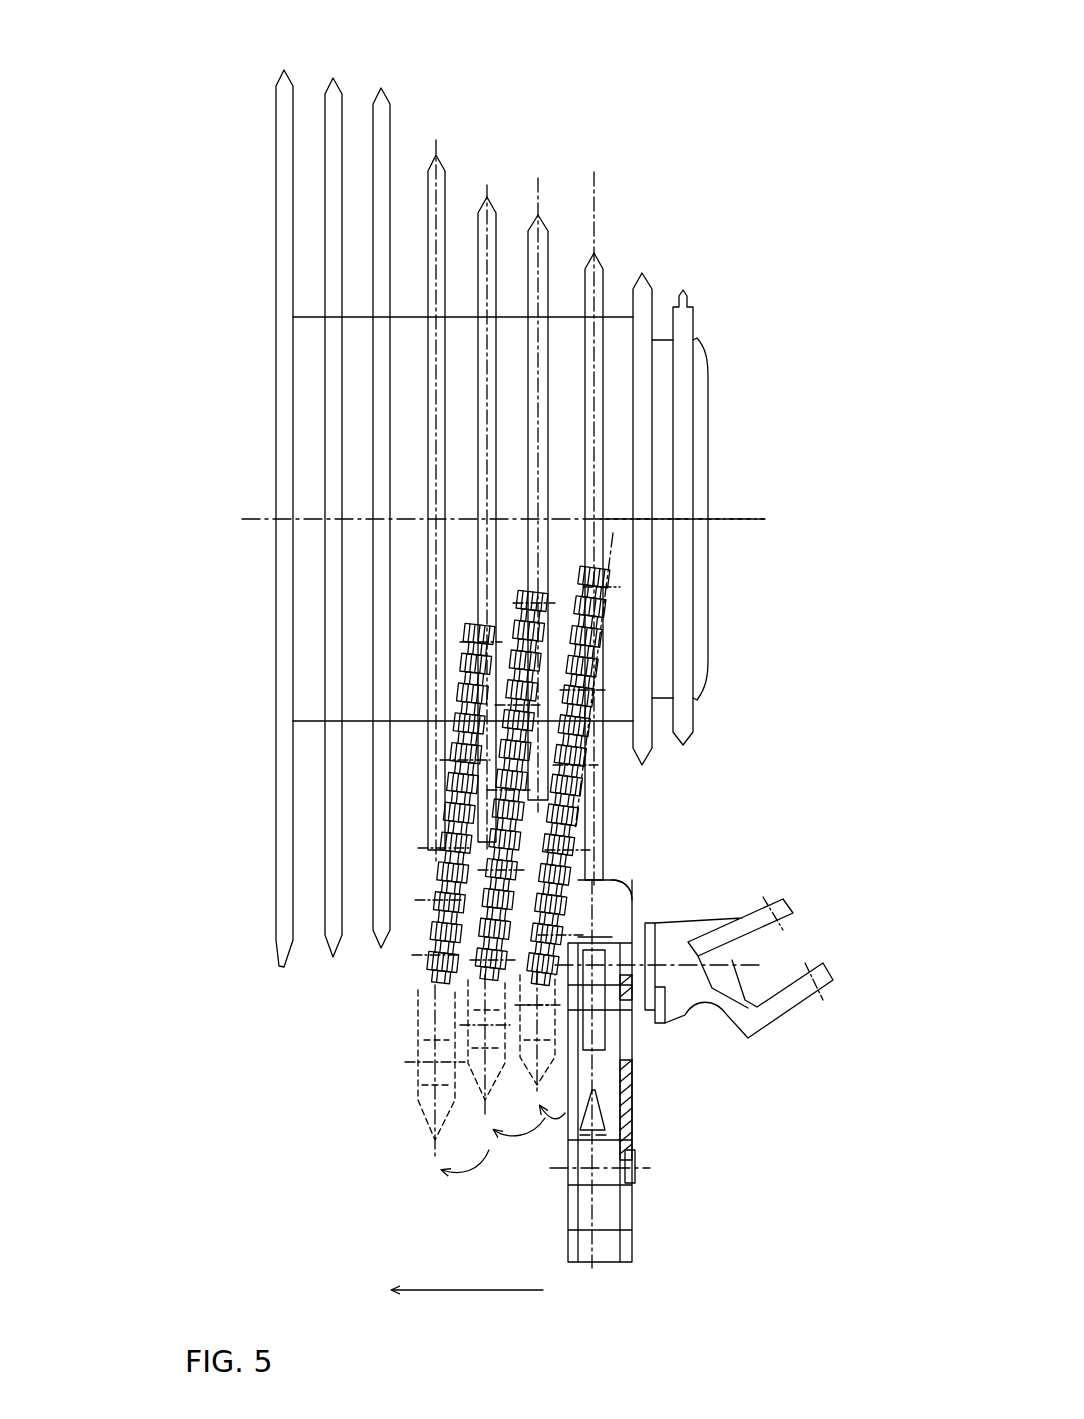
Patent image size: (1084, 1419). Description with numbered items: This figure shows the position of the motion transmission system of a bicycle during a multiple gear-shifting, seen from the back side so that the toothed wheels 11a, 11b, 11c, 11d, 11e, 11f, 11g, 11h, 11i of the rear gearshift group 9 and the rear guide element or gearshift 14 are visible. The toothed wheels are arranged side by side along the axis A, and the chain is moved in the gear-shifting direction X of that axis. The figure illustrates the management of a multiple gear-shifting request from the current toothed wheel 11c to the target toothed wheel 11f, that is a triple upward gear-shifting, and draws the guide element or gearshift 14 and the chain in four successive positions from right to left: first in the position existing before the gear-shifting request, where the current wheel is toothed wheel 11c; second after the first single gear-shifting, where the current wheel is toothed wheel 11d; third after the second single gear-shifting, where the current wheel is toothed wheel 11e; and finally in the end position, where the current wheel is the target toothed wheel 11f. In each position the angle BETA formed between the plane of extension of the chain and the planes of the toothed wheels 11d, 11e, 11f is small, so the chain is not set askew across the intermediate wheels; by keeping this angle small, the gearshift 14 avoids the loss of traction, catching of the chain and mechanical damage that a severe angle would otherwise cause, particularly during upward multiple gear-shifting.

The rear gearshift group 9 is at (224, 511).
The toothed wheel 11a is at (684, 291).
The toothed wheel 11b is at (643, 274).
The current toothed wheel 11c is at (594, 254).
The toothed wheel 11d is at (539, 216).
The toothed wheel 11e is at (488, 199).
The target toothed wheel 11f is at (437, 156).
The toothed wheel 11g is at (381, 90).
The toothed wheel 11h is at (333, 80).
The toothed wheel 11i is at (283, 71).
The rear guide element or gearshift 14 is at (632, 1104).
The axis A is at (756, 512).
The gear-shifting direction X is at (467, 1312).